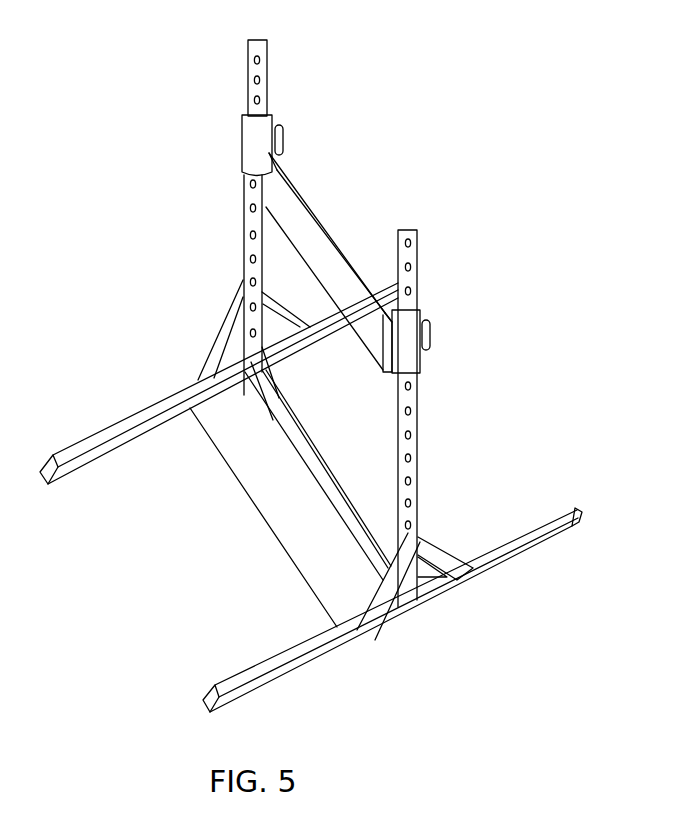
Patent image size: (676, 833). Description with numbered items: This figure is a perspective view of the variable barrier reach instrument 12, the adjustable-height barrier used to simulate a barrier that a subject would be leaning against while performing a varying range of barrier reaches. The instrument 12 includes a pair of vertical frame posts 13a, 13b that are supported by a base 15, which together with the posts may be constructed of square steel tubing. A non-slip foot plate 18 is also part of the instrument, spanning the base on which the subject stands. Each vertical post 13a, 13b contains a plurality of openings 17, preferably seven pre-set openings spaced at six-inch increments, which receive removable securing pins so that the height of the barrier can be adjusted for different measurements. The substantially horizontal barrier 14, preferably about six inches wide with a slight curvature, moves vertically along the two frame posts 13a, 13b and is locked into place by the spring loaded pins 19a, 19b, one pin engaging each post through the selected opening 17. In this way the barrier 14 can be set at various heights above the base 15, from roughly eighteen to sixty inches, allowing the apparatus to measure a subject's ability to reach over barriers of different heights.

The variable barrier reach instrument 12 is at (192, 30).
The vertical frame post 13a is at (258, 50).
The vertical frame post 13b is at (417, 470).
The horizontal barrier 14 is at (242, 168).
The base 15 is at (140, 410).
The openings 17 is at (243, 213).
The non-slip foot plate 18 is at (268, 488).
The spring loaded pin 19a is at (284, 138).
The spring loaded pin 19b is at (431, 336).